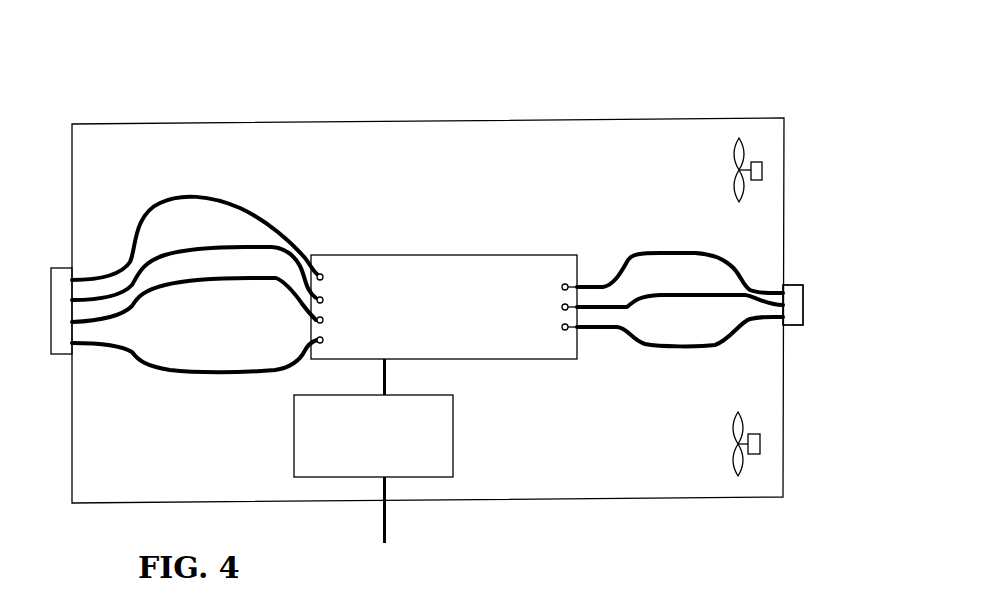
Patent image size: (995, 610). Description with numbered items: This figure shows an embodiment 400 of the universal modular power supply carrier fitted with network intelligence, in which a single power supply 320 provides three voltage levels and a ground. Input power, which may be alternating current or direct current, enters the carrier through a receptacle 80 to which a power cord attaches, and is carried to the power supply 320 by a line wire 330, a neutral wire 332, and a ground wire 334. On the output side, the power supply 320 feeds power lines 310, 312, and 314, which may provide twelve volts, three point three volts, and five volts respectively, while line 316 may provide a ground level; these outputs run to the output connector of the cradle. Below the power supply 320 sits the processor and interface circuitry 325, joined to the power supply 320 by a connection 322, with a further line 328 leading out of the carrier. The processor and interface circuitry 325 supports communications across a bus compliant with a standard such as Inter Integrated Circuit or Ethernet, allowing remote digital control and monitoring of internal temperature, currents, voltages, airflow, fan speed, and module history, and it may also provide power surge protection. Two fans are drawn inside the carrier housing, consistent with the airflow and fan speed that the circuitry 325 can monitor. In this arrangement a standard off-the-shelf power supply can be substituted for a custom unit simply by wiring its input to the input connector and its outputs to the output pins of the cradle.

The fiber optic switching system 400 is at (752, 58).
The power line 310 is at (233, 198).
The power line 312 is at (233, 247).
The power line 314 is at (270, 280).
The ground line 316 is at (235, 373).
The power supply 320 is at (458, 359).
The control line 322 is at (383, 373).
The processor and interface circuitry 325 is at (453, 455).
The external connection line 328 is at (385, 520).
The line wire 330 is at (653, 252).
The neutral wire 332 is at (675, 296).
The ground wire 334 is at (675, 349).
The receptacle 80 is at (803, 325).